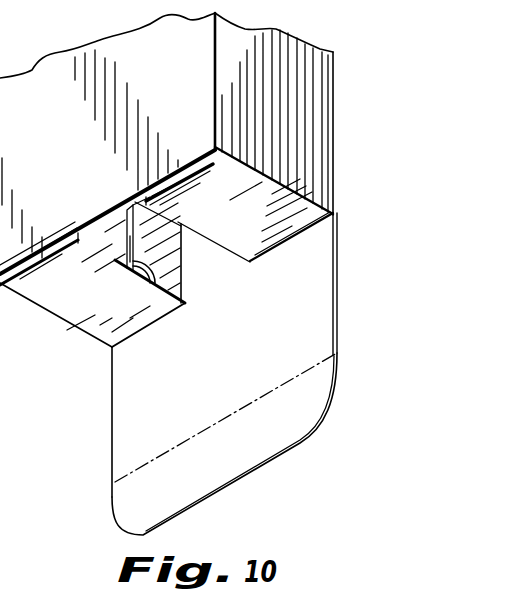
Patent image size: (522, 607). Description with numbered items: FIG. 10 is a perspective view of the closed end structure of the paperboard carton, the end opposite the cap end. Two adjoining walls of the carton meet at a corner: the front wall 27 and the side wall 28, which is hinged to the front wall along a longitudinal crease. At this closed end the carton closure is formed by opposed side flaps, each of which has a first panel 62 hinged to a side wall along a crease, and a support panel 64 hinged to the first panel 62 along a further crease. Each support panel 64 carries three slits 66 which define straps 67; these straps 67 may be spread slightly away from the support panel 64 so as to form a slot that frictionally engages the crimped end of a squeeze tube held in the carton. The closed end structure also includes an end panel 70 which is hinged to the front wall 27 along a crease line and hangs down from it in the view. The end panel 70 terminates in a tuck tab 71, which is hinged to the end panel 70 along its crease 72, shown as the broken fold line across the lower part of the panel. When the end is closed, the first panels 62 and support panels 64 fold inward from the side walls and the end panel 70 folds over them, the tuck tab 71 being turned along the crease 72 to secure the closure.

The front wall 27 is at (107, 135).
The side wall 28 is at (275, 45).
The first panel 62 is at (166, 248).
The support panel 64 is at (173, 240).
The slits 66 is at (150, 281).
The straps 67 is at (133, 237).
The end panel 70 is at (224, 355).
The tuck tab 71 is at (224, 444).
The crease 72 is at (213, 420).